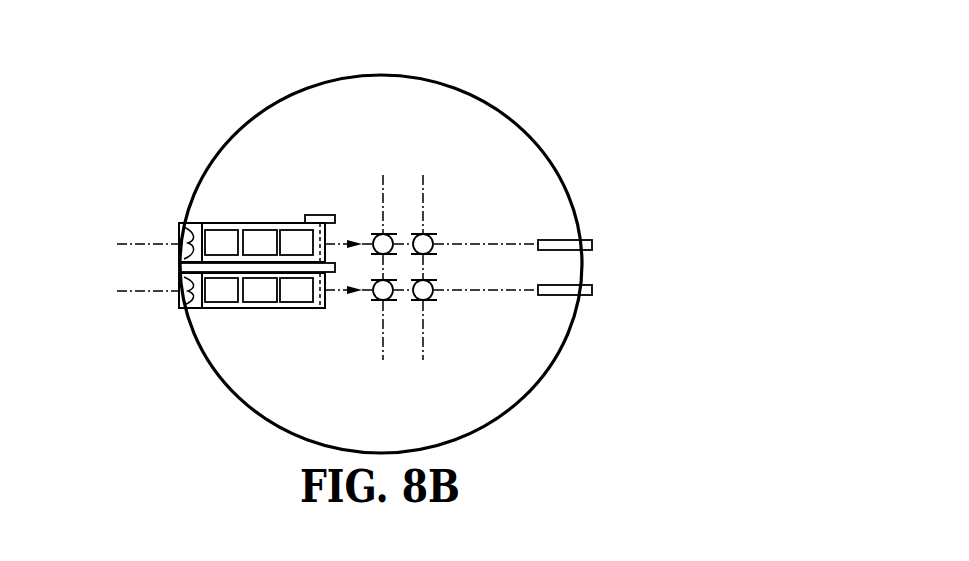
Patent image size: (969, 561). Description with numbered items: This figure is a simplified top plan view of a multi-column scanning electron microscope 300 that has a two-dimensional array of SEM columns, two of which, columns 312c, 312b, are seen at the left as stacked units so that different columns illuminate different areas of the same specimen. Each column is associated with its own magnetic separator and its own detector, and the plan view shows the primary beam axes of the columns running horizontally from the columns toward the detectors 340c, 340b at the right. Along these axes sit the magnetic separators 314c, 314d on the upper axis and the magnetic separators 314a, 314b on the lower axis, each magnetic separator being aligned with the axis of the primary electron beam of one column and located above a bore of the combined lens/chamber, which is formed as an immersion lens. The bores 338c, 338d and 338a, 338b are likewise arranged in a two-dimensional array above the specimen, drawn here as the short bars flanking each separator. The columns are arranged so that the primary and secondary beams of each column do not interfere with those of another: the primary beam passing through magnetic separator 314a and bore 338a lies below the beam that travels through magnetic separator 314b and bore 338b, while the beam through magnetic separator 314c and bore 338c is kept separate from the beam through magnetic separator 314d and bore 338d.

The multi-column SEM 300 is at (133, 121).
The SEM column 312c is at (179, 235).
The SEM column 312b is at (179, 298).
The magnetic separator 314a is at (392, 301).
The magnetic separator 314b is at (412, 301).
The magnetic separator 314c is at (392, 233).
The magnetic separator 314d is at (412, 233).
The bore 338a is at (373, 300).
The bore 338b is at (434, 300).
The bore 338c is at (373, 234).
The bore 338d is at (434, 234).
The detector 340c is at (592, 244).
The detector 340b is at (592, 290).